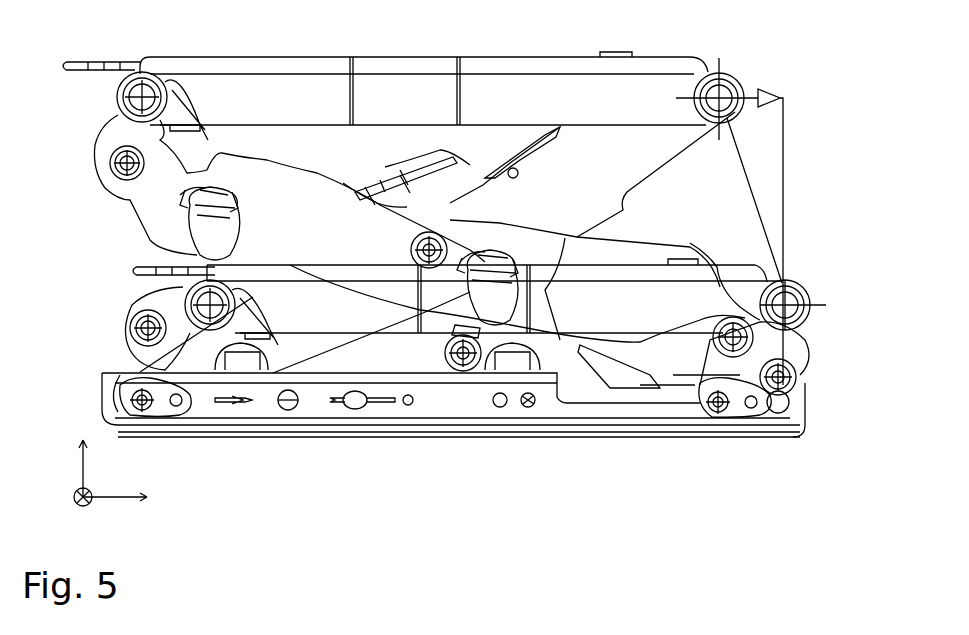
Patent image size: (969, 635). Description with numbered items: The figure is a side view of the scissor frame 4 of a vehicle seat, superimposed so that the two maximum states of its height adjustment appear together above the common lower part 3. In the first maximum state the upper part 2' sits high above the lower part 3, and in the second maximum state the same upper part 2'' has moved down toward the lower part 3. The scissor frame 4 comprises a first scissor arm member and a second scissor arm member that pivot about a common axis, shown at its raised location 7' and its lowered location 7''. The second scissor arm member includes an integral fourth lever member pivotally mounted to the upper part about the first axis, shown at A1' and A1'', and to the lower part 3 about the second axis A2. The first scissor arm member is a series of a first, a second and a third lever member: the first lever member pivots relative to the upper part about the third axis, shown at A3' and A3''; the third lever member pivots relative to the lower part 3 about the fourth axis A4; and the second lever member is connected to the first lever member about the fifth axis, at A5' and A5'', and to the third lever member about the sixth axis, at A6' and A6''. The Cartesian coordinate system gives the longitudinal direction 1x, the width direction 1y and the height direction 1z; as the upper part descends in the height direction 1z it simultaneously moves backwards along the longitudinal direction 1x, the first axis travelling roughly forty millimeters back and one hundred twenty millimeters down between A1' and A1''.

The upper part 2' is at (385, 66).
The upper part 2'' is at (458, 284).
The lower part 3 is at (395, 430).
The scissor frame 4 is at (820, 166).
The common axis 7' is at (475, 221).
The common axis 7'' is at (475, 404).
The first axis A1' is at (679, 151).
The first axis A1'' is at (770, 286).
The second axis A2 is at (143, 410).
The third axis A3' is at (153, 78).
The third axis A3'' is at (175, 310).
The fourth axis A4 is at (720, 412).
The fifth axis A5' is at (265, 188).
The fifth axis A5'' is at (131, 328).
The sixth axis A6' is at (753, 350).
The sixth axis A6'' is at (820, 376).
The longitudinal direction 1x is at (745, 90).
The width direction 1y is at (83, 500).
The height direction 1z is at (787, 207).